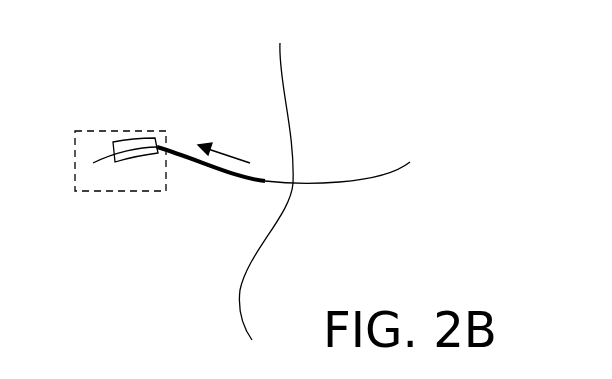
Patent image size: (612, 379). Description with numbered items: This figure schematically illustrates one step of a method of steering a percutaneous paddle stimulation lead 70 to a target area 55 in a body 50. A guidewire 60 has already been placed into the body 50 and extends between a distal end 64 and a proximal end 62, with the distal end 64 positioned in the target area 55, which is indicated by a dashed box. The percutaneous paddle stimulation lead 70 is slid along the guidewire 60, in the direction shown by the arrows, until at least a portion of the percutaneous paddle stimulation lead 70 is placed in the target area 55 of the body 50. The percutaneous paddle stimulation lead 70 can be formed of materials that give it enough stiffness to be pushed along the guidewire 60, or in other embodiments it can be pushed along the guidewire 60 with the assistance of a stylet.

The body 50 is at (285, 97).
The target area 55 is at (95, 131).
The guidewire 60 is at (347, 185).
The proximal end 62 is at (392, 150).
The distal end 64 is at (110, 163).
The percutaneous paddle stimulation lead 70 is at (169, 136).